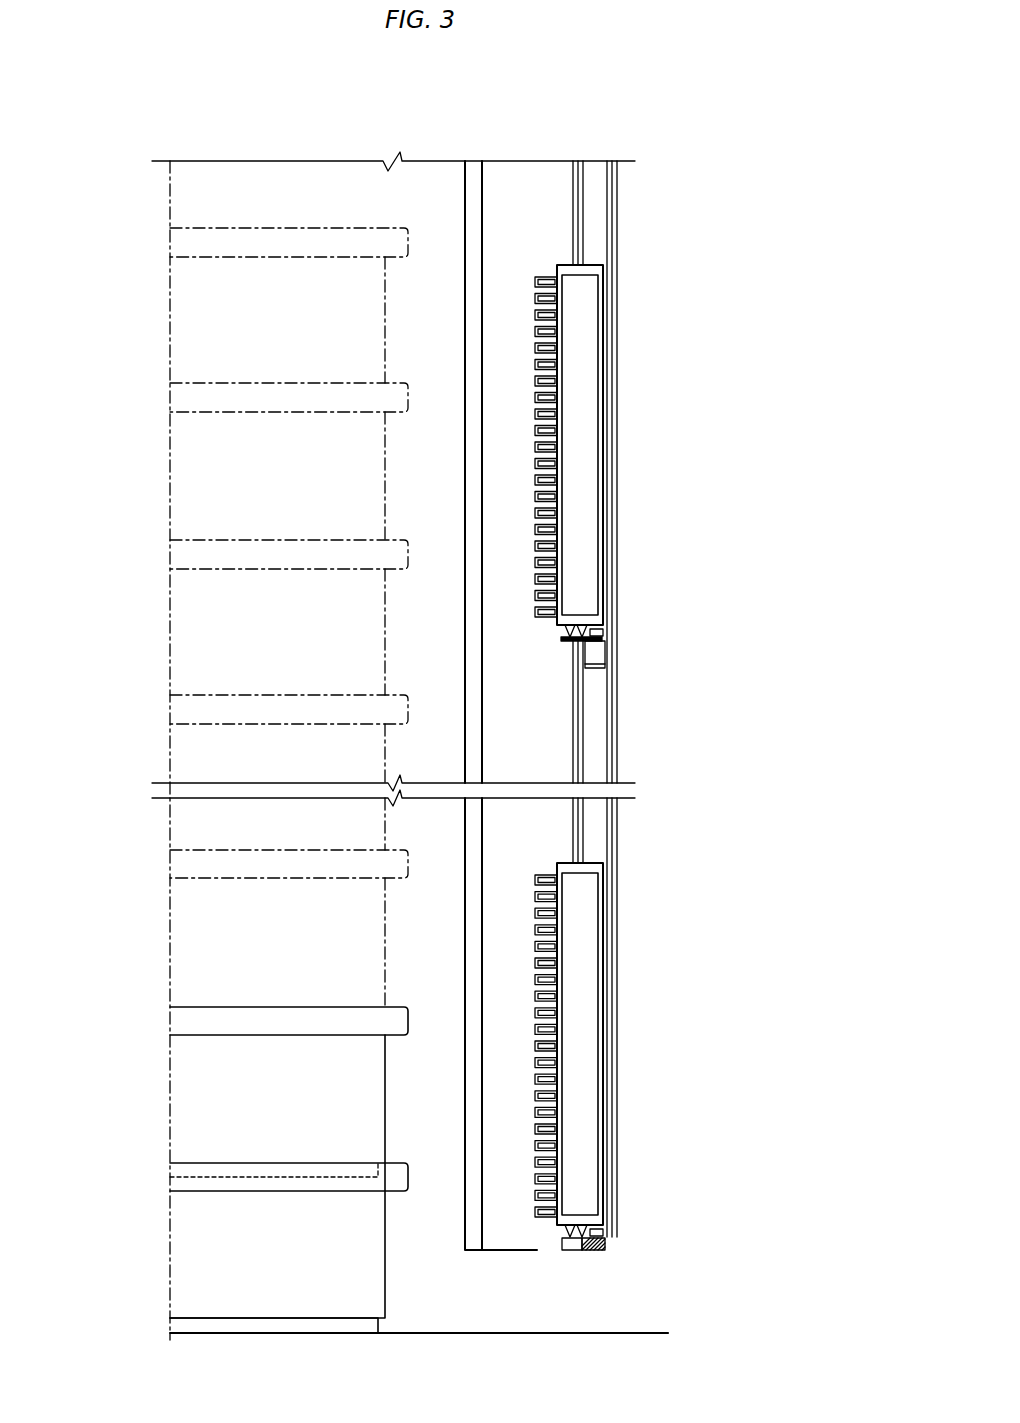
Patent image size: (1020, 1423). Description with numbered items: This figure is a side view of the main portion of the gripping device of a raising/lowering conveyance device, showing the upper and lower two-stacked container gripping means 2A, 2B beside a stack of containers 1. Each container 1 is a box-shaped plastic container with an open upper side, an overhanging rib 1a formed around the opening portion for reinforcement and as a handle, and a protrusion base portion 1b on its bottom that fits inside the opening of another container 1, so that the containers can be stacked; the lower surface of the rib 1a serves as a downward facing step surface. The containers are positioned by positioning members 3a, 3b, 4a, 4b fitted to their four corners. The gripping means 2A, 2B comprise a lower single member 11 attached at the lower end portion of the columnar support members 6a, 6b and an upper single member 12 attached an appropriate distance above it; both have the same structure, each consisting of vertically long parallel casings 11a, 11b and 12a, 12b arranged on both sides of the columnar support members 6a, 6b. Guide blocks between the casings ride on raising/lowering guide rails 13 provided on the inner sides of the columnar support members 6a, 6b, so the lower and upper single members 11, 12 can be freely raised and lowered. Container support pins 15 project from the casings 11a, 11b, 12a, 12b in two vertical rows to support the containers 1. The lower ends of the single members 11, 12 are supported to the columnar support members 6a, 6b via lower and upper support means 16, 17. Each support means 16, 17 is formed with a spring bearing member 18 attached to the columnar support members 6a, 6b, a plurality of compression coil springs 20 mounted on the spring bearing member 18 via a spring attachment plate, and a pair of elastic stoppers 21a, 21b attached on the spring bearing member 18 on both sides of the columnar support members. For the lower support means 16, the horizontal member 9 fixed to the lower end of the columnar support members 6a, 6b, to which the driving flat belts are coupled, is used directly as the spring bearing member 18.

The container 1 is at (190, 477).
The overhanging rib 1a is at (190, 400).
The protrusion base portion 1b is at (315, 1325).
The container gripping means 2A is at (401, 969).
The container gripping means 2B is at (520, 974).
The positioning member 3a is at (406, 681).
The positioning member 3b is at (406, 681).
The positioning member 4a is at (406, 681).
The positioning member 4b is at (465, 200).
The columnar support member 6a is at (675, 699).
The columnar support member 6b is at (597, 208).
The horizontal member 9 is at (592, 1252).
The lower single member 11 is at (662, 1044).
The parallel casing 11a is at (664, 1044).
The parallel casing 11b is at (585, 975).
The upper single member 12 is at (662, 445).
The parallel casing 12a is at (664, 445).
The parallel casing 12b is at (585, 456).
The raising/lowering guide rail 13 is at (573, 195).
The container support pin 15 is at (535, 362).
The lower support means 16 is at (552, 1232).
The upper support means 17 is at (552, 632).
The spring bearing member 18 is at (565, 645).
The compression coil spring 20 is at (583, 627).
The stopper 21a is at (674, 927).
The stopper 21b is at (600, 618).